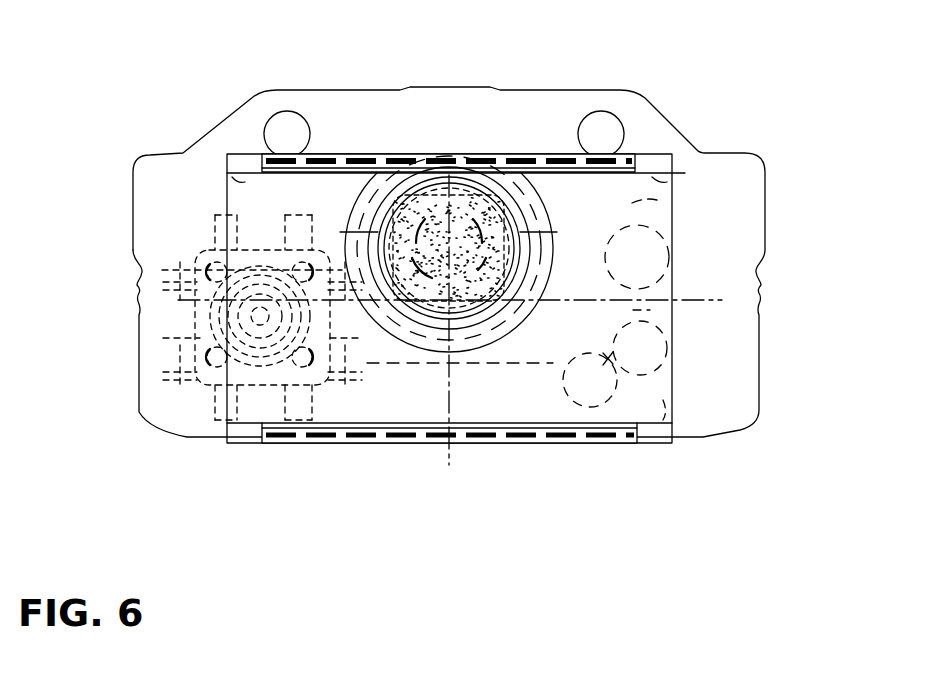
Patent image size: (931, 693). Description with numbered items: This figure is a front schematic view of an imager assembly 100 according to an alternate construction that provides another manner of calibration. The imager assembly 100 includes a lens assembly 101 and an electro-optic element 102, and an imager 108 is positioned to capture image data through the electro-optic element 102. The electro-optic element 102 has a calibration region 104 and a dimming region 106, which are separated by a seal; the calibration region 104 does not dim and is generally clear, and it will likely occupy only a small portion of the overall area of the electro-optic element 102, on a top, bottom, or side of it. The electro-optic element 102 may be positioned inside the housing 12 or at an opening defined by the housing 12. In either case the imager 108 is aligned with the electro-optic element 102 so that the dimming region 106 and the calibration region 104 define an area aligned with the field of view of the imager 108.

The imager assembly 100 is at (724, 79).
The housing 12 is at (430, 88).
The lens assembly 101 is at (490, 334).
The electro-optic element 102 is at (630, 213).
The calibration region 104 is at (460, 220).
The dimming region 106 is at (455, 262).
The imager 108 is at (393, 223).